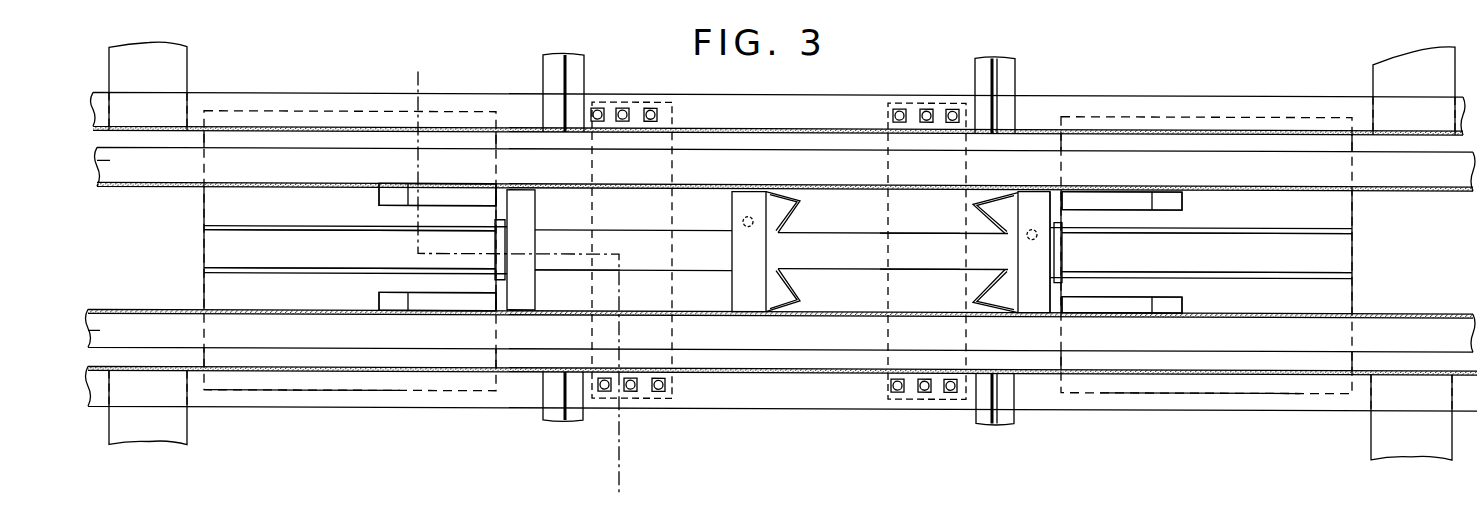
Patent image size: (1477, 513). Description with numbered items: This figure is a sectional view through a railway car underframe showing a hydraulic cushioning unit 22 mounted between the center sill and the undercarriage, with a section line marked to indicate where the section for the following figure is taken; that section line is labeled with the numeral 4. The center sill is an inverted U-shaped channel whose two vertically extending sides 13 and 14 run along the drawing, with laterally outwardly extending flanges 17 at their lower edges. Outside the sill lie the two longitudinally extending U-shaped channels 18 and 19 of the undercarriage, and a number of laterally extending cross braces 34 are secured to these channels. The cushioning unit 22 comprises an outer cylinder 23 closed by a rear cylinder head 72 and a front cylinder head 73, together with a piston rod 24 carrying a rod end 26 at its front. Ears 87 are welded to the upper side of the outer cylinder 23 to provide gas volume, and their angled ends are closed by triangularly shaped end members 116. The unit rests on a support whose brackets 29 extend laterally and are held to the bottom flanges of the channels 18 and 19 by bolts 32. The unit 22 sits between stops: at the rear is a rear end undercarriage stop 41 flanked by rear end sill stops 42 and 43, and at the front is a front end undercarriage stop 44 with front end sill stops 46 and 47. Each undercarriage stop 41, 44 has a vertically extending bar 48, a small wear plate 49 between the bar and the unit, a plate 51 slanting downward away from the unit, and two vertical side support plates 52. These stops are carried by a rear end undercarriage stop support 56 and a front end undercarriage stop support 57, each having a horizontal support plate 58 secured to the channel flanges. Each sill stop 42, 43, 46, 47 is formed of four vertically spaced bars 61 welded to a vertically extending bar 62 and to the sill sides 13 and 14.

The section line 4- 4 is at (450, 70).
The vertically extending side 13 is at (115, 187).
The vertically extending side 14 is at (111, 311).
The laterally outwardly extending flange 17 is at (134, 176).
The U-shaped channel 18 is at (445, 400).
The U-shaped channel 19 is at (283, 96).
The hydraulic cushioning unit 22 is at (754, 318).
The outer cylinder 23 is at (846, 264).
The piston rod 24 is at (697, 242).
The rod end 26 is at (523, 259).
The bracket 29 is at (660, 398).
The bolt 32 is at (652, 104).
The cross brace 34 is at (172, 75).
The rear end undercarriage stop 41 is at (1350, 252).
The rear end sill stop 42 is at (1188, 212).
The rear end sill stop 43 is at (1190, 297).
The front end undercarriage stop 44 is at (200, 254).
The front end sill stop 46 is at (368, 198).
The front end sill stop 47 is at (368, 298).
The vertically extending bar 48 is at (500, 240).
The wear plate 49 is at (510, 232).
The plate 51 is at (318, 266).
The side support plate 52 is at (215, 226).
The rear end undercarriage stop support 56 is at (1177, 400).
The front end undercarriage stop support 57 is at (305, 396).
The support plate 58 is at (345, 384).
The vertically spaced bar 61 is at (443, 196).
The vertically extending bar 62 is at (510, 196).
The rear cylinder head 72 is at (1022, 196).
The front cylinder head 73 is at (745, 196).
The ear 87 is at (932, 279).
The triangularly shaped end member 116 is at (790, 205).